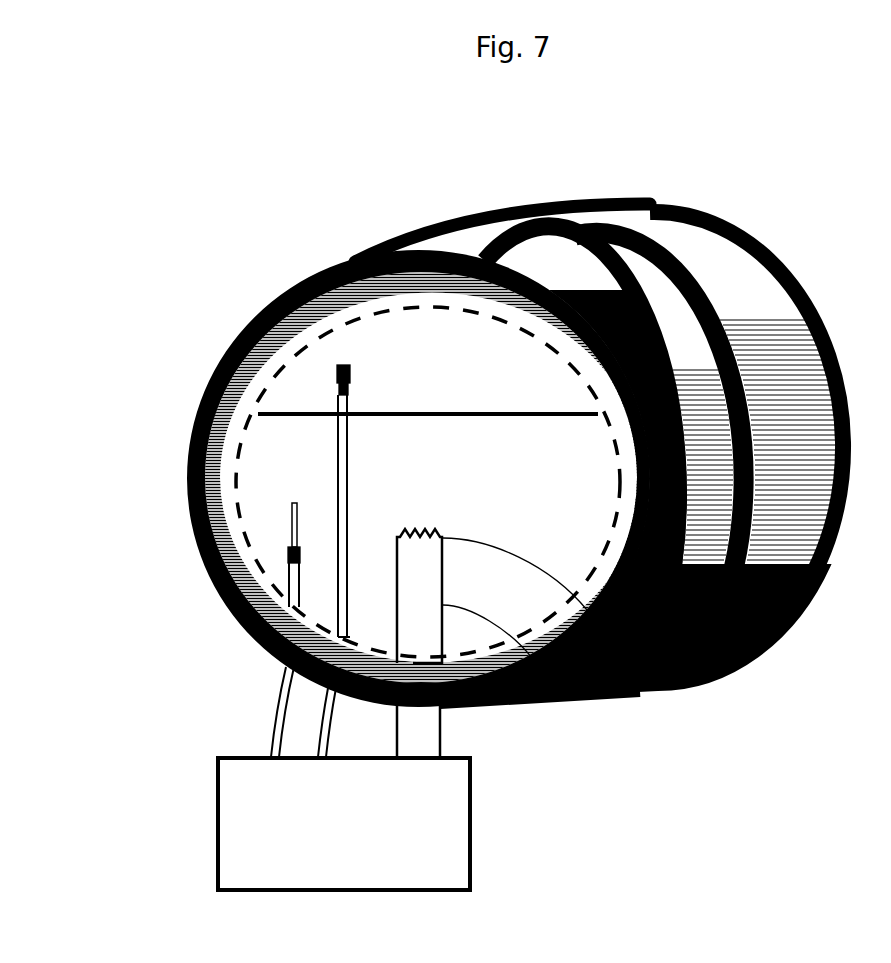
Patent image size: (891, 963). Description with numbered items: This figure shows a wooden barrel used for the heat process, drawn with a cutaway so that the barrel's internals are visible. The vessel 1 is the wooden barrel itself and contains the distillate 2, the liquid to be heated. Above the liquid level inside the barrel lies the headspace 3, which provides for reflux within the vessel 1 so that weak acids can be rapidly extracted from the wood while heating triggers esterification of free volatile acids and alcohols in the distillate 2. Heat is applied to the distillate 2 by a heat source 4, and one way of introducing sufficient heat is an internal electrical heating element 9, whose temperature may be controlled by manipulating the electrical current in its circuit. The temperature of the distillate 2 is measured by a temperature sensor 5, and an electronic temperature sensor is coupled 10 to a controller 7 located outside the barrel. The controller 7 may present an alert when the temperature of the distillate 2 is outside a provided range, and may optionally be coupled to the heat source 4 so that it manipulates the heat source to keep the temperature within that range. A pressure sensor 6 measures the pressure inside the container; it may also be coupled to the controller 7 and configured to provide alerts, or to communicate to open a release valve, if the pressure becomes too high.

The vessel 1 is at (773, 260).
The distillate 2 is at (282, 438).
The headspace 3 is at (428, 313).
The heat source 4 is at (560, 703).
The temperature sensor 5 is at (290, 577).
The pressure sensor 6 is at (333, 370).
The controller 7 is at (443, 834).
The internal electrical heating element 9 is at (653, 672).
The coupling 10 is at (290, 553).